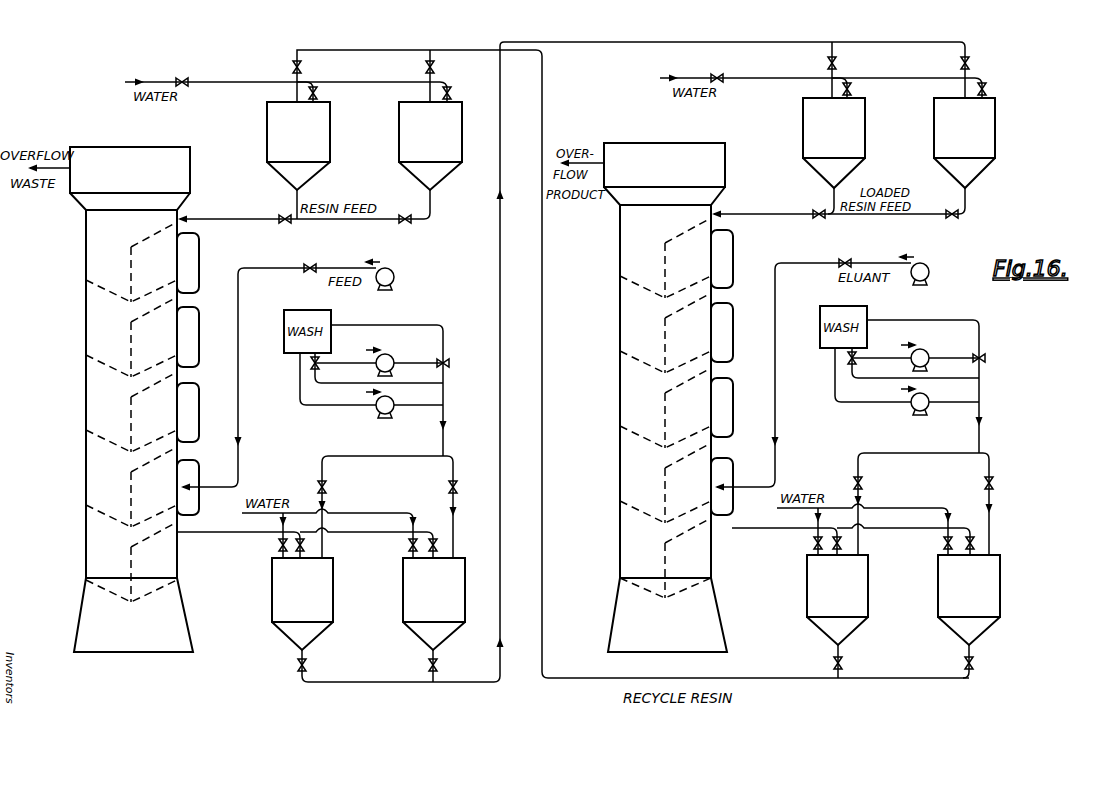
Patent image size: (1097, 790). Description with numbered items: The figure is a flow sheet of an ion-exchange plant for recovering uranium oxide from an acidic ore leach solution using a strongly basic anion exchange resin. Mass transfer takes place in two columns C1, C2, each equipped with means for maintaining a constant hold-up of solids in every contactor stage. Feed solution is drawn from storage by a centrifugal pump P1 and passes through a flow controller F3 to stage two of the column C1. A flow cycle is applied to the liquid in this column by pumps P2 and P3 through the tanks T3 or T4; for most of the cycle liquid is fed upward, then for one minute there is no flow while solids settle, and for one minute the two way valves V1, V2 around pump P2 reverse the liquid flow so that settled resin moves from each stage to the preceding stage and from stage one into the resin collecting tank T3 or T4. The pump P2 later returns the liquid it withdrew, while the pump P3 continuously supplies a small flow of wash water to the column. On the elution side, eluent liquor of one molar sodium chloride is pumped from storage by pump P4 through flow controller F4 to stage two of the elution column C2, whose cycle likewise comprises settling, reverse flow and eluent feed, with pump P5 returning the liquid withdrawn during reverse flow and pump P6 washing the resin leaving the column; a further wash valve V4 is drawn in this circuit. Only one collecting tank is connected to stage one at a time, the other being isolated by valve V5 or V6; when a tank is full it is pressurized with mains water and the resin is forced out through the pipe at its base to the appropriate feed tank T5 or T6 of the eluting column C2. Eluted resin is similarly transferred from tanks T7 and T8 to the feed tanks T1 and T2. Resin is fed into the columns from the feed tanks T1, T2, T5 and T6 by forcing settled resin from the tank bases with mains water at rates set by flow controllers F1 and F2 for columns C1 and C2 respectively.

The column C1 is at (86, 412).
The elution column C2 is at (640, 148).
The feed tank T1 is at (298, 160).
The feed tank T2 is at (430, 160).
The collecting tank T3 is at (302, 614).
The collecting tank T4 is at (434, 620).
The feed tank T5 is at (834, 156).
The feed tank T6 is at (964, 156).
The tank T7 is at (837, 616).
The tank T8 is at (969, 616).
The flow controller F1 is at (180, 76).
The flow controller F2 is at (716, 72).
The flow controller F3 is at (315, 264).
The flow controller F4 is at (850, 260).
The centrifugal pump P1 is at (394, 270).
The pump P2 is at (392, 361).
The pump P3 is at (377, 412).
The pump P4 is at (929, 267).
The pump P5 is at (912, 352).
The pump P6 is at (913, 410).
The two way valve V1 is at (308, 362).
The two way valve V2 is at (449, 360).
The wash valve V4 is at (985, 356).
The valve V5 is at (306, 544).
The valve V6 is at (440, 542).